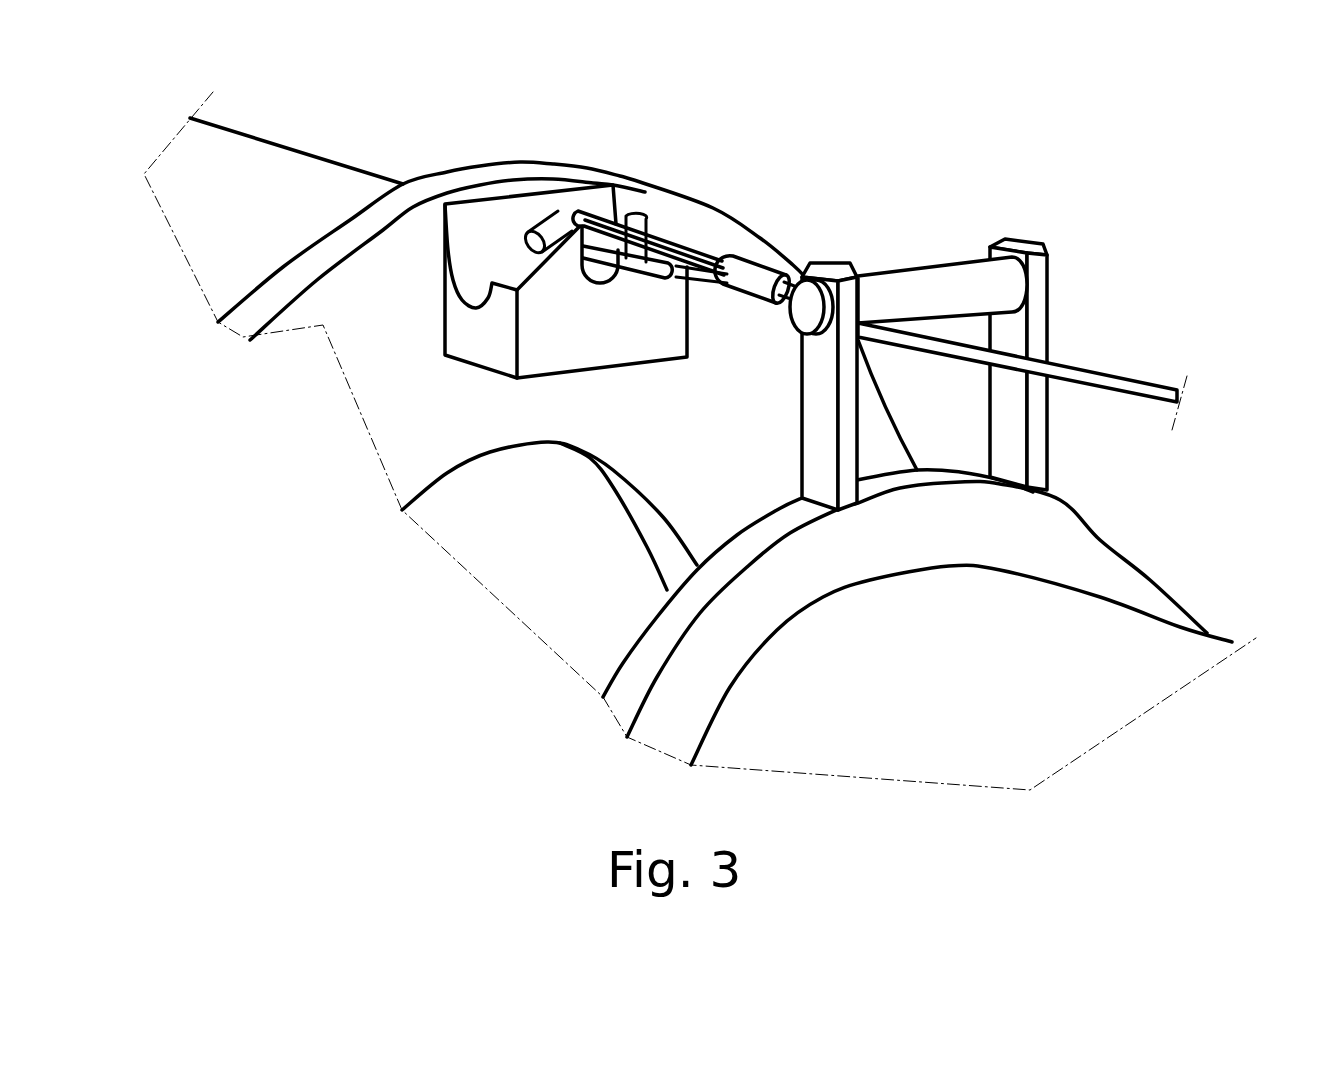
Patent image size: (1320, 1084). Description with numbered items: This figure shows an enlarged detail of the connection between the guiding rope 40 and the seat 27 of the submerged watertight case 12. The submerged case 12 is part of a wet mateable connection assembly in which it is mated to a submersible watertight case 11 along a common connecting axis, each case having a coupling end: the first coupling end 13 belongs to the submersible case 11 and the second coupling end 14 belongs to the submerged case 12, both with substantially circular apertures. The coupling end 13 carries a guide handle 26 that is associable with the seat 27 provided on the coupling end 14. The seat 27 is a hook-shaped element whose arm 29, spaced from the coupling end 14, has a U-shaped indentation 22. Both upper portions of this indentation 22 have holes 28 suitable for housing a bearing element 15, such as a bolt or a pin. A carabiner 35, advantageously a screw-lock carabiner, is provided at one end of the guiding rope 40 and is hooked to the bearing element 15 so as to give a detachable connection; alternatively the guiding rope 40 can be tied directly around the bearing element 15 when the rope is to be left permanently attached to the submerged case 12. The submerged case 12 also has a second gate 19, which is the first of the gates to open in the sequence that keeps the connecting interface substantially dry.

The submersible watertight case 11 is at (815, 712).
The submerged watertight case 12 is at (259, 193).
The first coupling end 13 is at (687, 668).
The second coupling end 14 is at (713, 208).
The bearing element 15 is at (537, 224).
The second gate 19 is at (513, 537).
The U-shaped indentation 22 is at (597, 285).
The guide handle 26 is at (945, 298).
The seat 27 is at (457, 323).
The holes 28 is at (560, 220).
The arm 29 is at (614, 348).
The carabiner 35 is at (637, 262).
The guiding rope 40 is at (1123, 383).